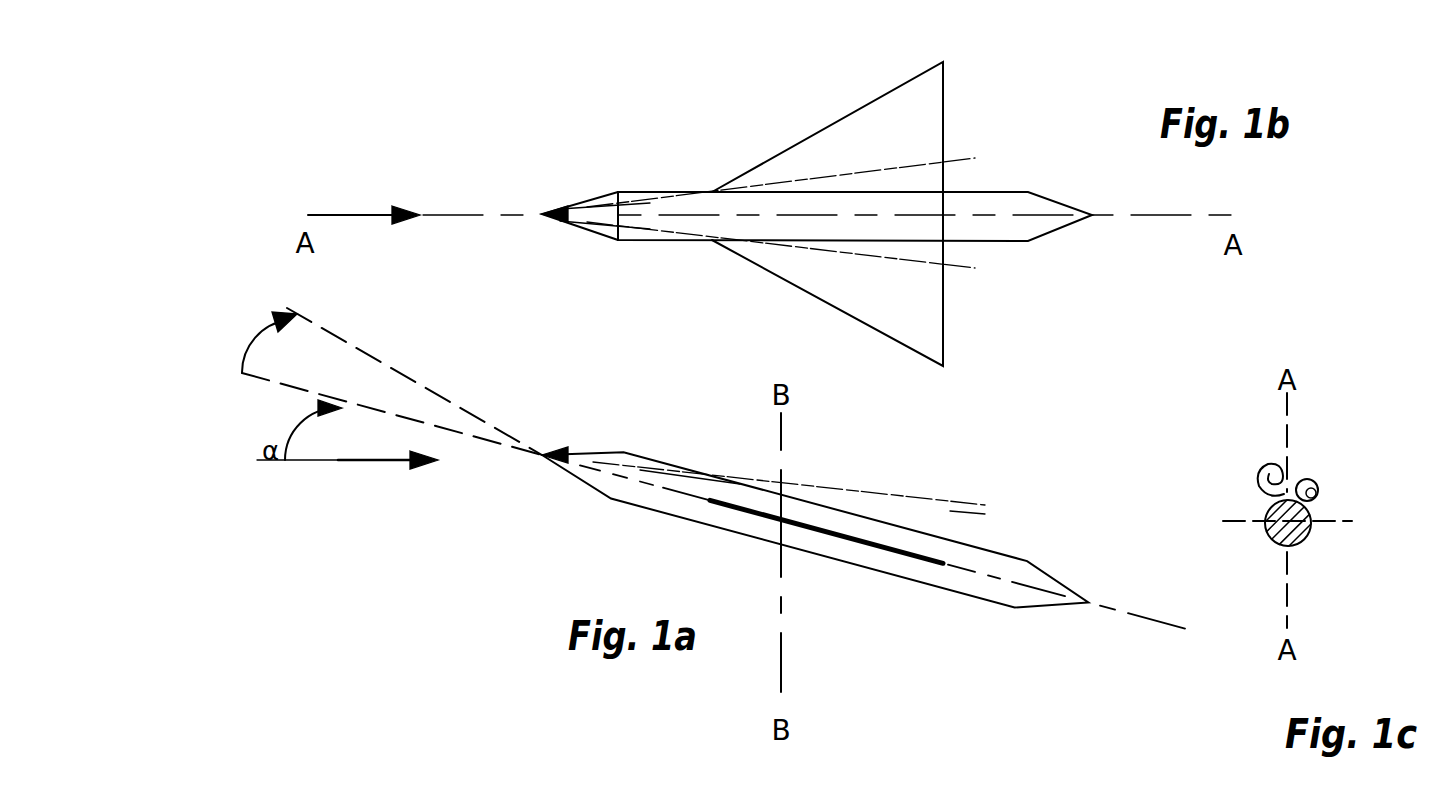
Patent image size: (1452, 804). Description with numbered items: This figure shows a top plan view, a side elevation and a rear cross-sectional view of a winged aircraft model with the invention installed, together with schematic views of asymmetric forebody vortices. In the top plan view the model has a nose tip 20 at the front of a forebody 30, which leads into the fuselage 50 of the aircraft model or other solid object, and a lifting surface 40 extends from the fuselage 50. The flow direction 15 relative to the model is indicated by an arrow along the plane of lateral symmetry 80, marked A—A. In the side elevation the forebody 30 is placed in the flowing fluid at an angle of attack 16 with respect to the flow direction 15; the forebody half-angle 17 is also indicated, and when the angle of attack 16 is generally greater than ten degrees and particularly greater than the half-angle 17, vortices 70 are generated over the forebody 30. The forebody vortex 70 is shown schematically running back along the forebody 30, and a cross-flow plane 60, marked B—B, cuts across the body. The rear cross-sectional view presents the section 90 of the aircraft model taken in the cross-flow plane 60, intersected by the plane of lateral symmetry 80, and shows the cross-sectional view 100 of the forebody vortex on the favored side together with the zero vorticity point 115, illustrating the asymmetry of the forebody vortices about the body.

In FIG. 1b, the flow direction 15 is at (358, 215).
In FIG. 1a, the flow direction 15 is at (323, 467).
In FIG. 1a, the angle of attack 16 is at (290, 427).
In FIG. 1a, the forebody half-angle 17 is at (268, 322).
In FIG. 1b, the nose tip 20 is at (555, 210).
In FIG. 1b, the forebody 30 is at (592, 203).
In FIG. 1b, the lifting surface 40 is at (807, 137).
In FIG. 1b, the fuselage 50 is at (978, 190).
In FIG. 1a, the cross-flow plane B—B 60 is at (778, 440).
In FIG. 1a, the forebody vortex 70 is at (707, 472).
In FIG. 1c, the plane of lateral symmetry A—A 80 is at (1283, 420).
In FIG. 1c, the section of aircraft model in cross-flow plane B—B 90 is at (1310, 543).
In FIG. 1c, the cross-sectional view of forebody vortex on favored side 100 is at (1313, 478).
In FIG. 1c, the zero vorticity point 115 is at (1278, 502).